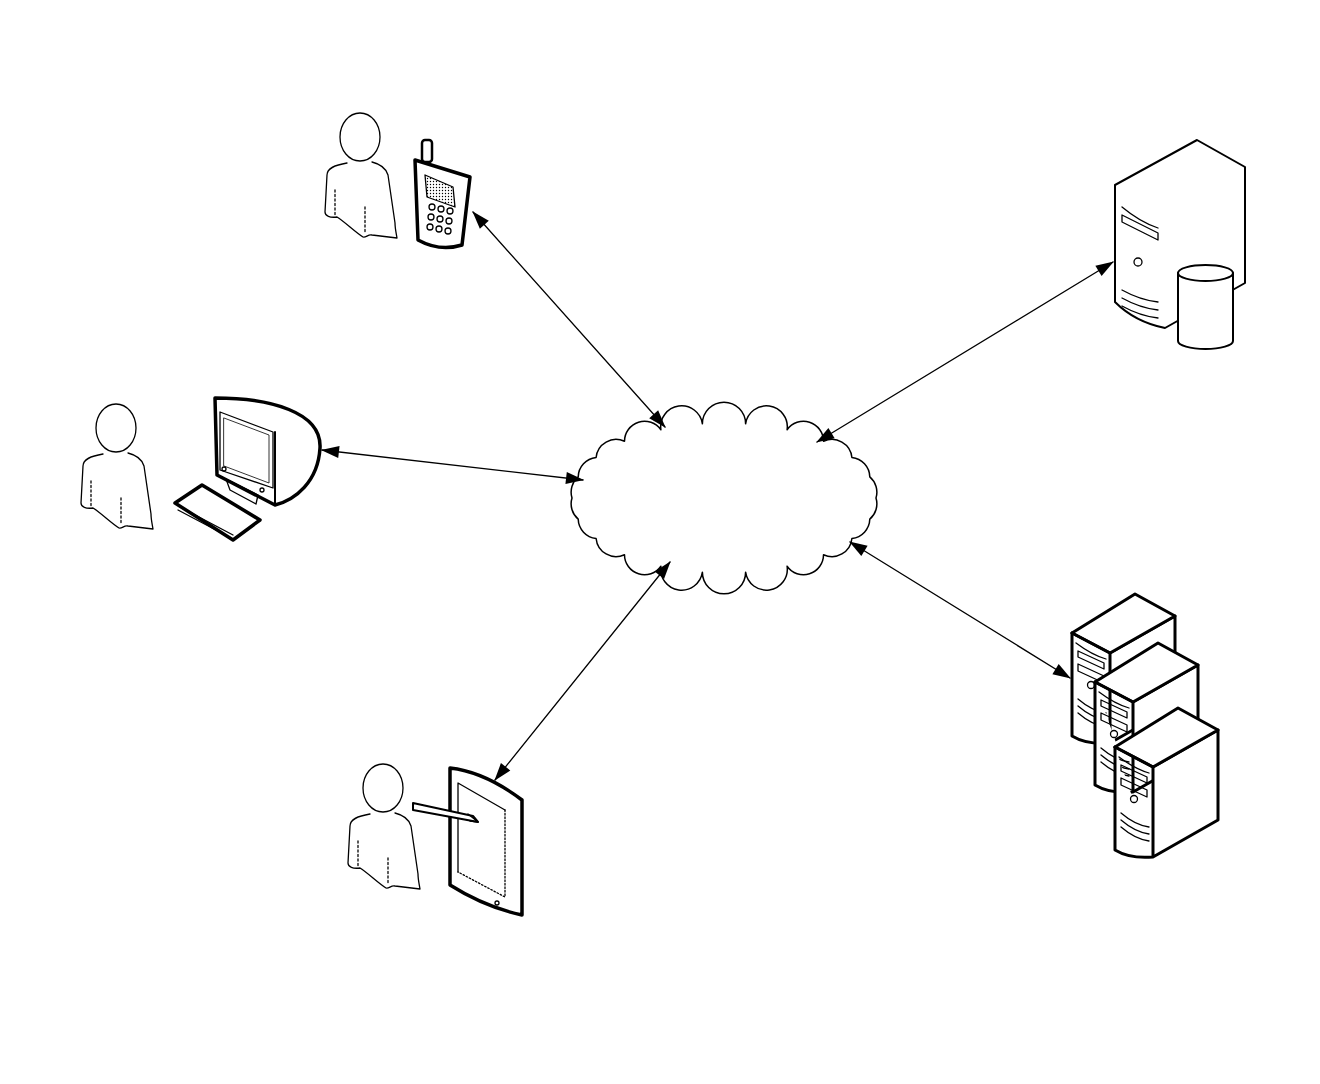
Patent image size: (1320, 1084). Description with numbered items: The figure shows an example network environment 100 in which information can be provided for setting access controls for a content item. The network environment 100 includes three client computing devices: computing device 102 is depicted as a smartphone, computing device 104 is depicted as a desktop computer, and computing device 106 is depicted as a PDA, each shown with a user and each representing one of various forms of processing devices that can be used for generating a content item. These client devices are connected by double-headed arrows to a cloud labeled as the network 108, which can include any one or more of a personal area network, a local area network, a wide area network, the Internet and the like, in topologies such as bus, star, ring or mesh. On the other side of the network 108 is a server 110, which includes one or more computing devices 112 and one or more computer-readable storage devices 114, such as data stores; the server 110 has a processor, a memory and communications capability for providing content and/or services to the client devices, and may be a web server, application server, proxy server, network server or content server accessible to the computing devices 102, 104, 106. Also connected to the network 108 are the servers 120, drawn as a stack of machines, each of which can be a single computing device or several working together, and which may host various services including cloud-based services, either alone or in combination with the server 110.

The network environment 100 is at (880, 148).
The computing device 102 is at (455, 165).
The computing device 104 is at (280, 404).
The computing device 106 is at (519, 798).
The network 108 is at (724, 425).
The server 110 is at (1182, 246).
The computing device 112 is at (1225, 157).
The computer-readable storage device 114 is at (1218, 347).
The servers 120 is at (1064, 824).